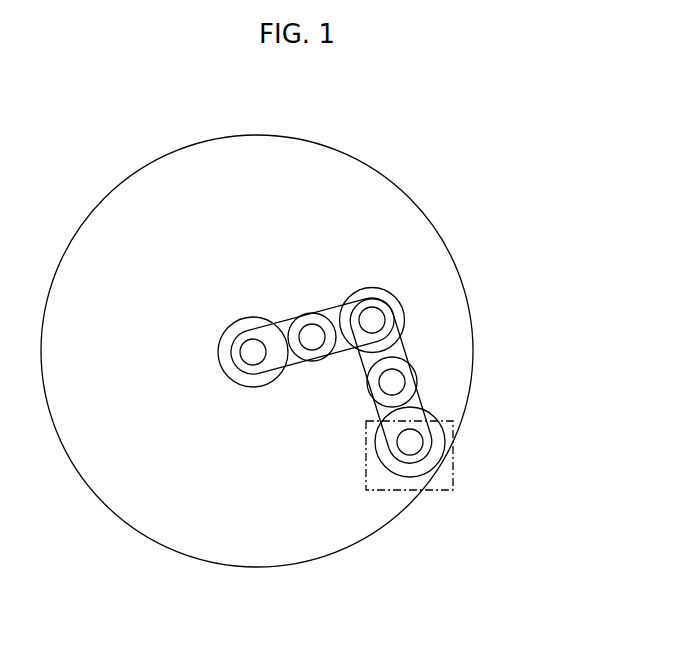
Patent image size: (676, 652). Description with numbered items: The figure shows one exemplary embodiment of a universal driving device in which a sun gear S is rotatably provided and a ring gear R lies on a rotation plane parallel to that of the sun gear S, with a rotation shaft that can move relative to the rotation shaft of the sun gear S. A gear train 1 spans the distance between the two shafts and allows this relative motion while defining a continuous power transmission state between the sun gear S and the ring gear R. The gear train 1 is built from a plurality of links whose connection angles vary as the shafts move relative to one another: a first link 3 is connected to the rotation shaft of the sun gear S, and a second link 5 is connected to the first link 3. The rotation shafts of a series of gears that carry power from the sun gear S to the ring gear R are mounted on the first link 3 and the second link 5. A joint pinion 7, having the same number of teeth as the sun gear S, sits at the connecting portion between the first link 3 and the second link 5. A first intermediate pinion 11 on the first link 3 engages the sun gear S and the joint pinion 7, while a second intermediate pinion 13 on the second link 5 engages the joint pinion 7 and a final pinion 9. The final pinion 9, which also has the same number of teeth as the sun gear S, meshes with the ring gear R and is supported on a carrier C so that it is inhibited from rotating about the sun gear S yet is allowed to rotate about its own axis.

The gear train 1 is at (432, 300).
The first link 3 is at (272, 370).
The second link 5 is at (410, 410).
The joint pinion 7 is at (383, 290).
The final pinion 9 is at (427, 465).
The first intermediate pinion 11 is at (308, 313).
The second intermediate pinion 13 is at (415, 375).
The sun gear S is at (235, 327).
The ring gear R is at (387, 177).
The carrier C is at (453, 468).